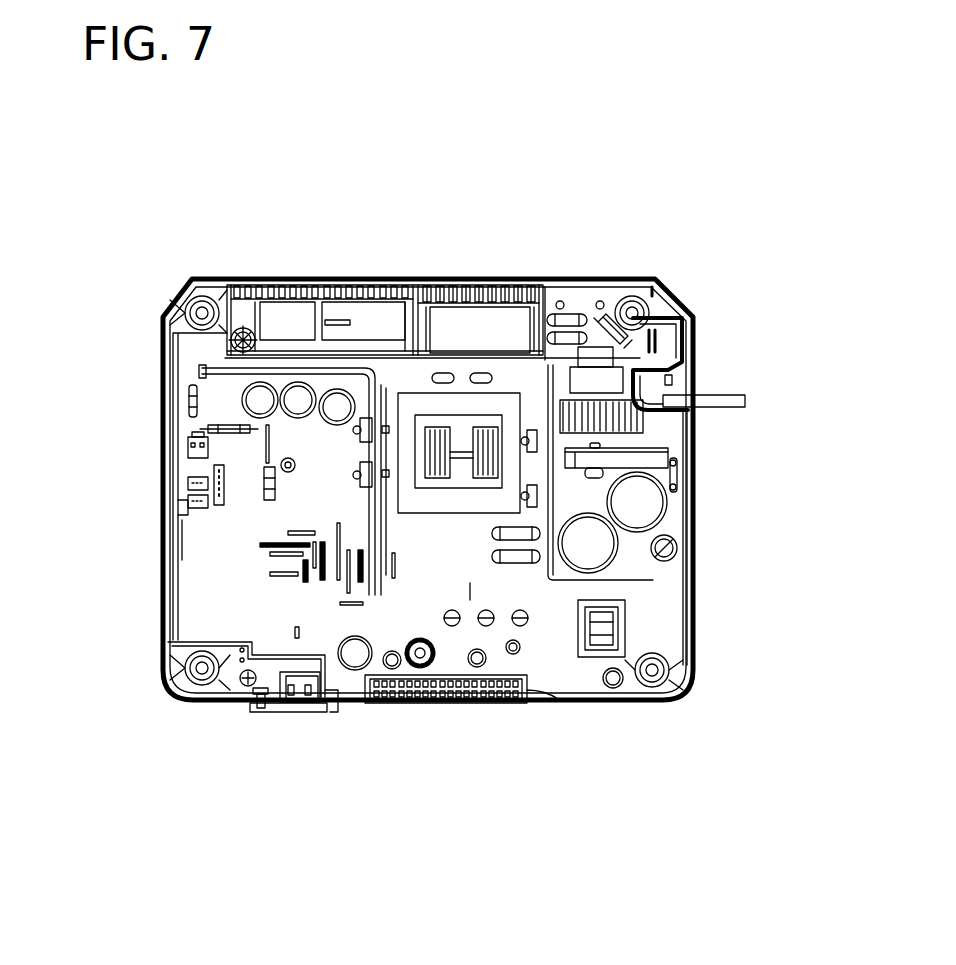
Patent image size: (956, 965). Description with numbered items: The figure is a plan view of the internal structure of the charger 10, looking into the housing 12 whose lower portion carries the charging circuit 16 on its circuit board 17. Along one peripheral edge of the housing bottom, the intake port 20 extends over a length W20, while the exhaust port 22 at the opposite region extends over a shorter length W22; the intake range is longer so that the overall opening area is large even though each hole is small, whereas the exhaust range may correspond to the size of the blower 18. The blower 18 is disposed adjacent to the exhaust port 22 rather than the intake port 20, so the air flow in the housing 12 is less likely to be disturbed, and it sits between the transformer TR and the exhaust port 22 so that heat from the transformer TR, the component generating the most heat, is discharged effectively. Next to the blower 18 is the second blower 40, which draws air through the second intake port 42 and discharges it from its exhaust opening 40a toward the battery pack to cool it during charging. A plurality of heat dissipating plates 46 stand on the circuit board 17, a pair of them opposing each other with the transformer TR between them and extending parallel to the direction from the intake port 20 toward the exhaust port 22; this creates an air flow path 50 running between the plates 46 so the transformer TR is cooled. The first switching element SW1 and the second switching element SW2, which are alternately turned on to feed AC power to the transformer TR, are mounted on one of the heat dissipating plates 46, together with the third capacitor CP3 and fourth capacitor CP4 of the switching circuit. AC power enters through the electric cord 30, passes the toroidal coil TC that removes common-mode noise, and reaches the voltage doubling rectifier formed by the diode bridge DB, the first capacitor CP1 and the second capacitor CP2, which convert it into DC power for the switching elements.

The charger 10 is at (704, 232).
The housing 12 is at (695, 348).
The charging circuit 16 is at (200, 620).
The circuit board 17 is at (177, 557).
The blower 18 is at (547, 340).
The intake port 20 is at (530, 713).
The exhaust port 22 is at (542, 268).
The electric cord 30 is at (730, 398).
The second blower 40 is at (400, 285).
The exhaust opening 40a is at (252, 285).
The second intake port 42 is at (390, 268).
The heat dissipating plates 46 is at (665, 453).
The air flow path 50 is at (479, 600).
The transformer TR is at (510, 408).
The toroidal coil TC is at (645, 420).
The diode bridge DB is at (620, 462).
The first capacitor CP1 is at (603, 535).
The second capacitor CP2 is at (650, 513).
The third capacitor CP3 is at (540, 537).
The fourth capacitor CP4 is at (540, 557).
The first switching element SW1 is at (357, 430).
The second switching element SW2 is at (357, 478).
The length of the intake port range W20 is at (510, 813).
The length of the exhaust port range W22 is at (527, 178).